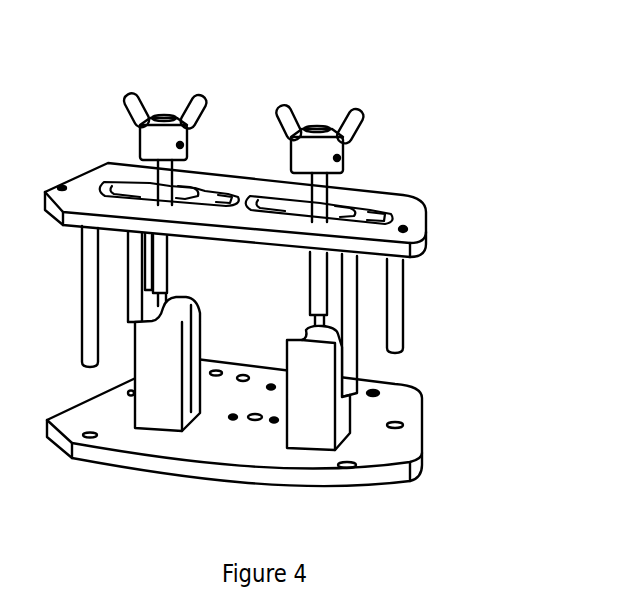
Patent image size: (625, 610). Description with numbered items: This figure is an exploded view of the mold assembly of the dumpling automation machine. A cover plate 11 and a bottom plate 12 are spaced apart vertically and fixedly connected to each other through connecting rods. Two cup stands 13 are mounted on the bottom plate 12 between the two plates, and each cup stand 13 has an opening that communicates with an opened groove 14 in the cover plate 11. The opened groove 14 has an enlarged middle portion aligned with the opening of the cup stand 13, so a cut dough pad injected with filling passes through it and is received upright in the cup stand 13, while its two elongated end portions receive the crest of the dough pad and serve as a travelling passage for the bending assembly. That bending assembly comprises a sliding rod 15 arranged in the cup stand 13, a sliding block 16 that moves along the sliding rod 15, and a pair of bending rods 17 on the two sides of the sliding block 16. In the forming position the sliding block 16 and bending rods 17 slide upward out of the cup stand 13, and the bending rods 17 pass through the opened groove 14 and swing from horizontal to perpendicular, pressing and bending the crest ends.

The cover plate 11 is at (412, 216).
The bottom plate 12 is at (383, 450).
The cup stand 13 is at (307, 425).
The opened groove 14 is at (105, 182).
The sliding rod 15 is at (313, 291).
The sliding block 16 is at (173, 118).
The bending rods 17 is at (364, 128).